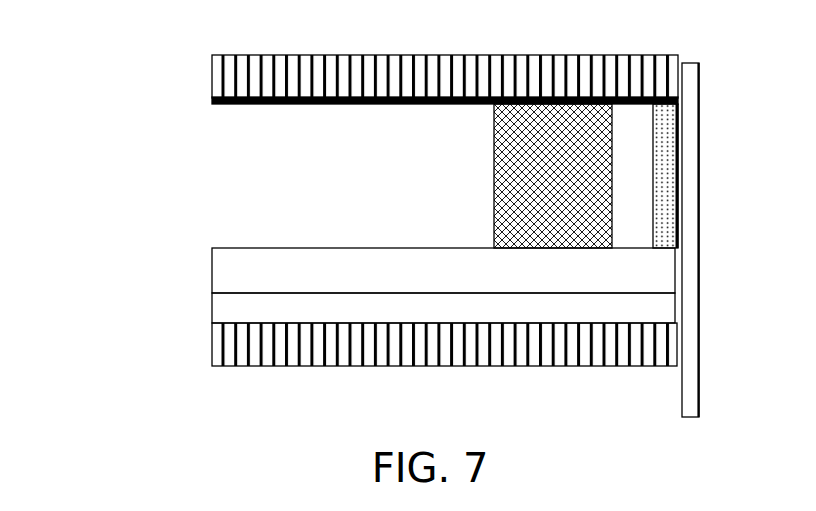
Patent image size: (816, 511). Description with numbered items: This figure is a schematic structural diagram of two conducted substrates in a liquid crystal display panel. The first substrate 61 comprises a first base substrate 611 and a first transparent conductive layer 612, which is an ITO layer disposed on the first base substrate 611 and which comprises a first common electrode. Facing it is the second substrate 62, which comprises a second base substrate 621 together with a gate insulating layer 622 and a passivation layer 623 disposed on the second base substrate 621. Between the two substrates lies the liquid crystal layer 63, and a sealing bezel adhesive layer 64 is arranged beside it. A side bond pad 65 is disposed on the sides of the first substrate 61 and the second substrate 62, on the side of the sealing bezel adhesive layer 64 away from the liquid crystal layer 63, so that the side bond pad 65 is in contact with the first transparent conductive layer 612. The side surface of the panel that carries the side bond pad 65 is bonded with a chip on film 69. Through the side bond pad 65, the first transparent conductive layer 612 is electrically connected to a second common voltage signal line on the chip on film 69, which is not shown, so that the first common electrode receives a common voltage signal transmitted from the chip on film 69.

The first substrate 61 is at (140, 65).
The first base substrate 611 is at (211, 74).
The first transparent conductive layer 612 is at (211, 100).
The second substrate 62 is at (147, 260).
The second base substrate 621 is at (211, 358).
The gate insulating layer 622 is at (211, 315).
The passivation layer 623 is at (211, 275).
The liquid crystal layer 63 is at (280, 173).
The sealing bezel adhesive layer 64 is at (494, 183).
The side bond pad 65 is at (675, 175).
The chip on film 69 is at (694, 272).